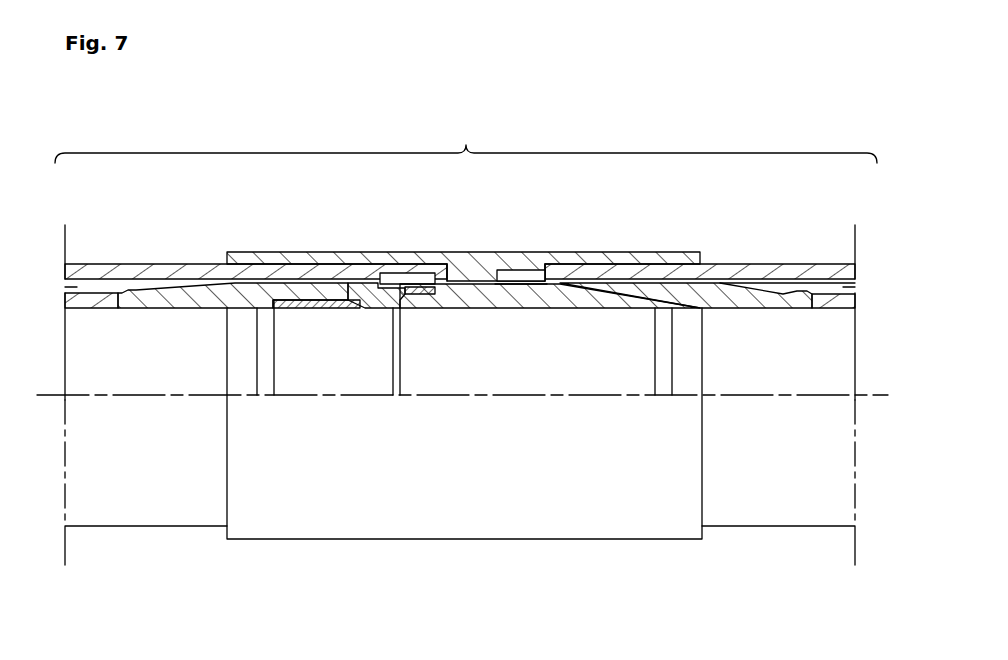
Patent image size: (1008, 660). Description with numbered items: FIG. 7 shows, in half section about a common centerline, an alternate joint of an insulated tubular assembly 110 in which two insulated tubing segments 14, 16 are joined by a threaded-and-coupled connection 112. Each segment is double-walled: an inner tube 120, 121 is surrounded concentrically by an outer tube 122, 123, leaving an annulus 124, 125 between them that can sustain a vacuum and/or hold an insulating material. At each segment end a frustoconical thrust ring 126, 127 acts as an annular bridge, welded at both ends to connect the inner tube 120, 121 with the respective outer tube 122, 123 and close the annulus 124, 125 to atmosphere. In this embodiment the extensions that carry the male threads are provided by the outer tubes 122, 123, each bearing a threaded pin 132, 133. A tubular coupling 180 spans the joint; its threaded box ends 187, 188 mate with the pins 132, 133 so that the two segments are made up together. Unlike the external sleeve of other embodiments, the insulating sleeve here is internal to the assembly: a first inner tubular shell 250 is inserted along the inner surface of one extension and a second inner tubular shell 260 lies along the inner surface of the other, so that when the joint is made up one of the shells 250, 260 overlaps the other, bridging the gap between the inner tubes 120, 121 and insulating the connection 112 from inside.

The insulated tubing segment 14 is at (158, 552).
The insulated tubing segment 16 is at (758, 540).
The tubular assembly 110 is at (670, 608).
The T&C connection 112 is at (466, 142).
The inner tube 120 is at (90, 300).
The inner tube 121 is at (840, 303).
The outer tube 122 is at (90, 265).
The outer tube 123 is at (755, 270).
The annulus 124 is at (76, 287).
The annulus 125 is at (845, 287).
The frustoconical thrust ring 126 is at (196, 298).
The frustoconical thrust ring 127 is at (730, 300).
The pin 132 is at (405, 273).
The pin 133 is at (547, 270).
The tubular coupling 180 is at (455, 265).
The threaded box end 187 is at (441, 268).
The threaded box end 188 is at (521, 272).
The first inner tubular shell 250 is at (388, 300).
The second inner tubular shell 260 is at (520, 300).